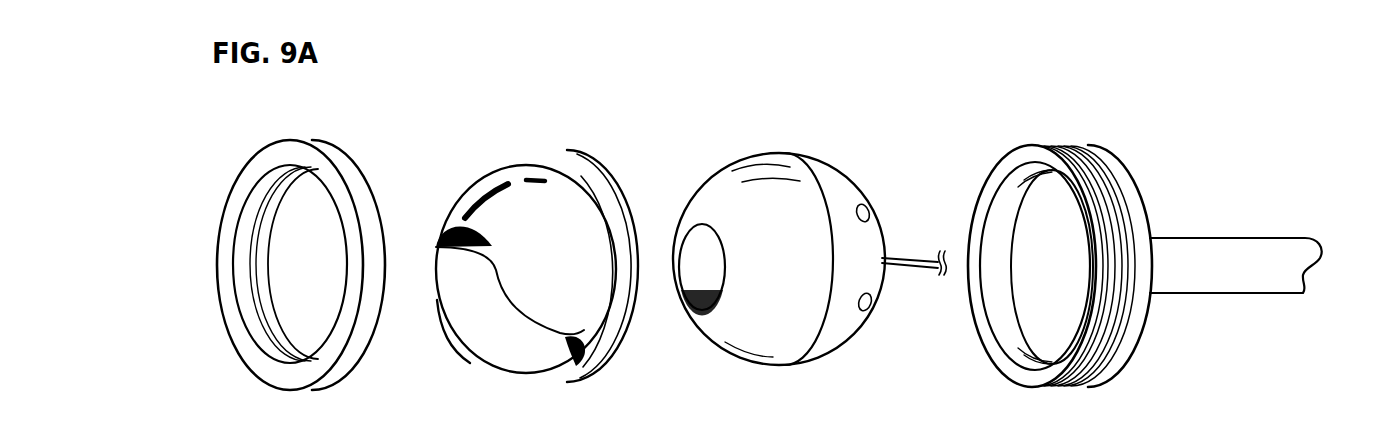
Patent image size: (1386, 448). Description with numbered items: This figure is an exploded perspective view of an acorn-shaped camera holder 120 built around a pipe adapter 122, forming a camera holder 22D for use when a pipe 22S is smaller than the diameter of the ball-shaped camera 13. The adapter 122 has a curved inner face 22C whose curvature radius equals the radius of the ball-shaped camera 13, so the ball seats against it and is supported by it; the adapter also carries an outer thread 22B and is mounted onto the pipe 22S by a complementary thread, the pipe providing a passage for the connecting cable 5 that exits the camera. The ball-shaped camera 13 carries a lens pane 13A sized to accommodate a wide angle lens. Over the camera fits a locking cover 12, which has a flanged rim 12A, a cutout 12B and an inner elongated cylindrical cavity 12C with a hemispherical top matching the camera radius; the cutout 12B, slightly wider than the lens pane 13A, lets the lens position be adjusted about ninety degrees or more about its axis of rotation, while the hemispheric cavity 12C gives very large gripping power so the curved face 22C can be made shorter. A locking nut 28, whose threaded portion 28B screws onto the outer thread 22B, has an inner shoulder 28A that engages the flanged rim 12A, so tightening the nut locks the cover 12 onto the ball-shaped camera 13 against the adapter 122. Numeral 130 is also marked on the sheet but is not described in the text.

The locking nut 28 is at (315, 251).
The inner shoulder 28A is at (245, 210).
The threaded portion 28B is at (268, 203).
The locking cover 12 is at (537, 255).
The flanged rim 12A is at (593, 162).
The cutout 12B is at (457, 337).
The inner elongated cylindrical cavity 12C is at (543, 355).
The ball-shaped camera 13 is at (802, 221).
The lens pane 13A is at (690, 252).
The connecting cable 5 is at (913, 268).
The acorn-shaped camera holder 120 is at (1138, 246).
The camera holder 22D is at (990, 193).
The curved inner face 22C is at (1003, 348).
The outer thread 22B is at (1058, 384).
The pipe adapter 122 is at (1137, 193).
The pipe 22S is at (1250, 240).
The mounting element 130 is at (1277, 441).